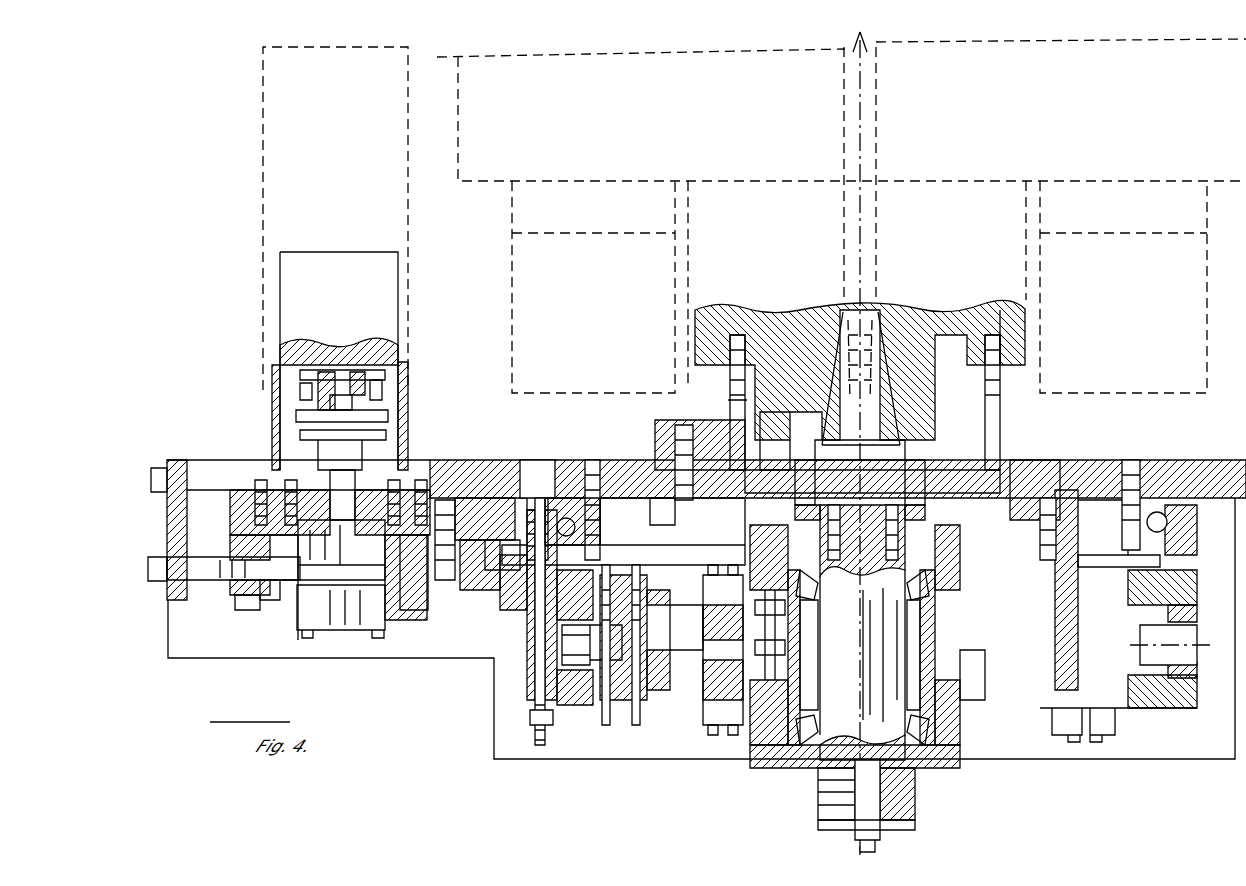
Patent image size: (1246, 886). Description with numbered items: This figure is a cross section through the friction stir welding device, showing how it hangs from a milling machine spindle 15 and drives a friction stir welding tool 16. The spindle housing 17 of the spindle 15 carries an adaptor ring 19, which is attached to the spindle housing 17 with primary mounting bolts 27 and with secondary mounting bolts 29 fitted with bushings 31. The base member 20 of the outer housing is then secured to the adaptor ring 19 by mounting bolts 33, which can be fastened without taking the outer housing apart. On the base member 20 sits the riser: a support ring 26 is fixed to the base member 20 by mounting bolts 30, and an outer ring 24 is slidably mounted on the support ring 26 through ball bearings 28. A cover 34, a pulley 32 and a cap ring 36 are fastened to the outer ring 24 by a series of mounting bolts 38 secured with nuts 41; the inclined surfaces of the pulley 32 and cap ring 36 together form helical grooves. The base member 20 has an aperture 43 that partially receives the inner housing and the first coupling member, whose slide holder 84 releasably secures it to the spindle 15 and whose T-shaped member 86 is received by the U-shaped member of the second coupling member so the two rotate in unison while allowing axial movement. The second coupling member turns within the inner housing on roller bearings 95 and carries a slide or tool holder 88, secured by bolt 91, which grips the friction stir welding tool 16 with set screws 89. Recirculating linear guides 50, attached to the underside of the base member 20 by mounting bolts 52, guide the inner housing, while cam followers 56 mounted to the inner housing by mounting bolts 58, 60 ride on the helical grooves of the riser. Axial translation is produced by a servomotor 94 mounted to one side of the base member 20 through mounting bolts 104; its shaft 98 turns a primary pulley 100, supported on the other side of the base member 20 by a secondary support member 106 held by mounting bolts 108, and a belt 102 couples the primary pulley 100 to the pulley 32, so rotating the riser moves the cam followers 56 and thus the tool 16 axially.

The spindle 15 is at (905, 35).
The friction stir welding tool 16 is at (855, 830).
The spindle housing 17 is at (700, 330).
The adaptor ring 19 is at (745, 345).
The base member 20 is at (240, 498).
The outer ring 24 is at (490, 588).
The support ring 26 is at (582, 512).
The primary mounting bolts 27 is at (1020, 320).
The ball bearings 28 is at (592, 521).
The secondary mounting bolts 29 is at (623, 531).
The mounting bolts 30 is at (560, 500).
The bushings 31 is at (775, 441).
The pulley 32 is at (505, 600).
The mounting bolts 33 is at (684, 428).
The cover 34 is at (525, 655).
The cap ring 36 is at (543, 745).
The mounting bolts 38 is at (527, 640).
The nuts 41 is at (530, 718).
The aperture 43 is at (832, 470).
The recirculating linear guides 50 is at (1060, 670).
The mounting bolts 52 is at (1060, 462).
The cam followers 56 is at (578, 700).
The mounting bolts 58 is at (610, 575).
The mounting bolts 60 is at (700, 690).
The slide holder 84 is at (893, 395).
The T-shaped member 86 is at (890, 482).
The slide or tool holder 88 is at (882, 812).
The set screws 89 is at (818, 790).
The bolt 91 is at (915, 800).
The servomotor 94 is at (318, 285).
The roller bearings 95 is at (705, 702).
The shaft 98 is at (235, 580).
The primary pulley 100 is at (258, 610).
The belt 102 is at (480, 580).
The mounting bolts 104 is at (148, 565).
The secondary support member 106 is at (395, 622).
The mounting bolts 108 is at (440, 602).